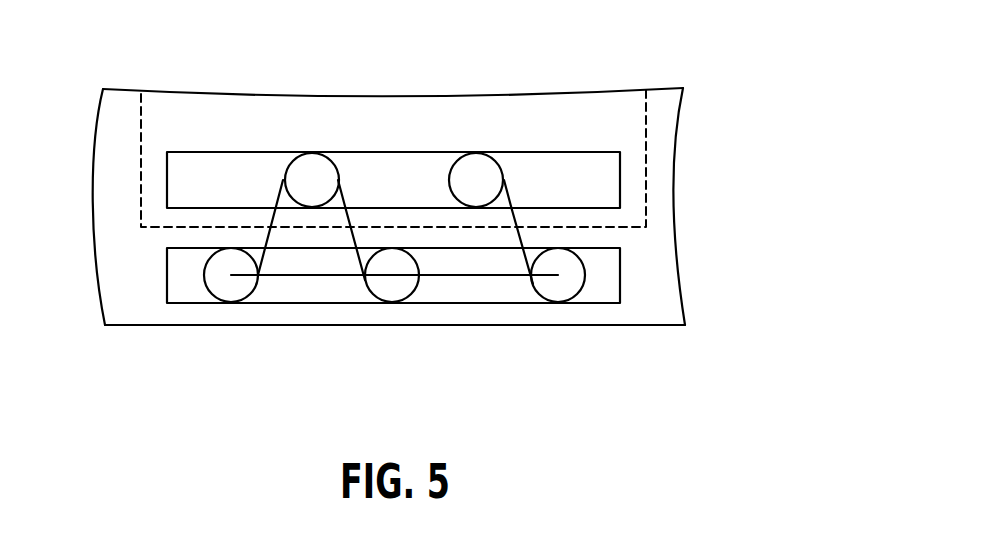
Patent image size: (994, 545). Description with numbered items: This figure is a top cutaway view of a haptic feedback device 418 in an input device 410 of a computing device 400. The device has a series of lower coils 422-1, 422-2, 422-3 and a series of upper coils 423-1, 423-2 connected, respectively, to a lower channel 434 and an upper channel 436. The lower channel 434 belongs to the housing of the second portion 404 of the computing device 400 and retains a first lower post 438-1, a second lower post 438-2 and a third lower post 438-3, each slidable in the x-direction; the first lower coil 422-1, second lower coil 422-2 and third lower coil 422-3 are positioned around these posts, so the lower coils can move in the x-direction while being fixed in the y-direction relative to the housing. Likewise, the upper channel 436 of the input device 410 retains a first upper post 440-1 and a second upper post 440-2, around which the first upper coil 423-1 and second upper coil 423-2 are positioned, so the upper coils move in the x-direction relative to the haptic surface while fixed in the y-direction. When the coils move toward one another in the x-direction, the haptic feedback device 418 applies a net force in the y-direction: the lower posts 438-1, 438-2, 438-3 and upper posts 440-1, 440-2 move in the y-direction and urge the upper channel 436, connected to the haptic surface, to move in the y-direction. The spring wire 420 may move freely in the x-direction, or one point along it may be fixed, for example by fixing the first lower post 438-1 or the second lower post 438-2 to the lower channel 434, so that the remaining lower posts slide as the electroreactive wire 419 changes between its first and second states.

The computing device 400 is at (437, 209).
The second portion 404 is at (663, 172).
The input device 410 is at (172, 113).
The haptic feedback device 418 is at (638, 242).
The electroreactive wire 419 is at (298, 278).
The spring wire 420 is at (203, 258).
The first lower coil 422-1 is at (203, 262).
The second lower coil 422-2 is at (358, 268).
The third lower coil 422-3 is at (530, 290).
The first upper coil 423-1 is at (343, 185).
The second upper coil 423-2 is at (507, 185).
The lower channel 434 is at (605, 287).
The upper channel 436 is at (587, 162).
The first lower post 438-1 is at (232, 293).
The second lower post 438-2 is at (397, 293).
The third lower post 438-3 is at (558, 293).
The first upper post 440-1 is at (310, 180).
The second upper post 440-2 is at (476, 180).